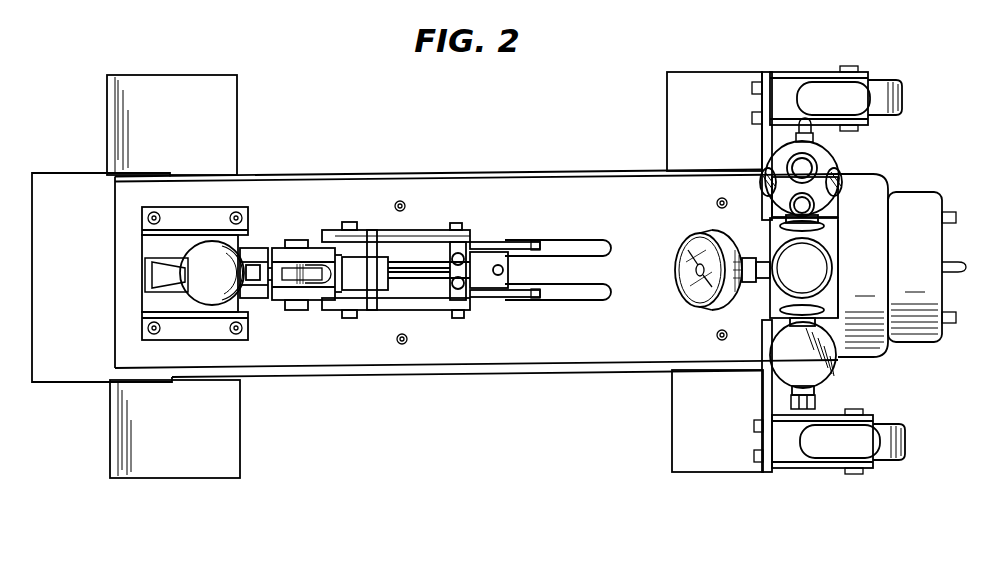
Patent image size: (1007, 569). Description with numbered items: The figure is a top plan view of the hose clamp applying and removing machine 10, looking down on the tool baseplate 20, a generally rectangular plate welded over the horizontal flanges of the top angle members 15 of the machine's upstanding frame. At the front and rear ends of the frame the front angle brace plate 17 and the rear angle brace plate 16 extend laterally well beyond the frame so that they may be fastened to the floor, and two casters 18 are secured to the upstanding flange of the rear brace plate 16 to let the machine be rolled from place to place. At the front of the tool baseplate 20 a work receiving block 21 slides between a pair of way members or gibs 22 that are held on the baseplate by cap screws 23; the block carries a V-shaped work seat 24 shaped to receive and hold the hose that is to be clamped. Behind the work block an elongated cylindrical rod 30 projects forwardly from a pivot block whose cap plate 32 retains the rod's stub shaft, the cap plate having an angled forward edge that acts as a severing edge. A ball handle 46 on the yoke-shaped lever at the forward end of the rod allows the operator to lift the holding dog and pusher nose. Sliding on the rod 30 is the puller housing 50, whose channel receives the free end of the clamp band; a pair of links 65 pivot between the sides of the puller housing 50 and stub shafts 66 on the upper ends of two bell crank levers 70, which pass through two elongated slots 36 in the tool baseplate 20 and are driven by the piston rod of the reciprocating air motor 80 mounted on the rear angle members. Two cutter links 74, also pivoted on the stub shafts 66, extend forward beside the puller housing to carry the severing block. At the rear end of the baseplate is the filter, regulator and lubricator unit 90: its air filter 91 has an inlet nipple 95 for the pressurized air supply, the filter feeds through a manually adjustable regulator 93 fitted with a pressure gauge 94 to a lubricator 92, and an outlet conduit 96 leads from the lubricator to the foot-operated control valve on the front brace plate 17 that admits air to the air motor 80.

The hose clamp applying and removing machine 10 is at (516, 110).
The top angle members 15 is at (572, 173).
The rear angle brace plate 16 is at (690, 82).
The front angle brace plate 17 is at (108, 462).
The casters 18 is at (872, 90).
The tool baseplate 20 is at (632, 186).
The work receiving block 21 is at (143, 250).
The way members or gibs 22 is at (143, 215).
The cap screws 23 is at (230, 215).
The V-shaped work seat 24 is at (158, 276).
The elongated cylindrical rod 30 is at (415, 268).
The cap plate 32 is at (485, 262).
The elongated slots 36 is at (612, 250).
The ball handle 46 is at (212, 300).
The puller housing 50 is at (270, 256).
The links 65 is at (396, 238).
The stub shafts 66 is at (458, 318).
The bell crank levers 70 is at (530, 291).
The cutter links 74 is at (425, 312).
The reciprocating air motor 80 is at (908, 196).
The filter, regulator and lubricator unit 90 is at (756, 352).
The air filter 91 is at (826, 366).
The lubricator 92 is at (828, 176).
The regulator 93 is at (815, 271).
The pressure gauge 94 is at (698, 248).
The inlet nipple 95 is at (816, 402).
The outlet conduit 96 is at (795, 130).